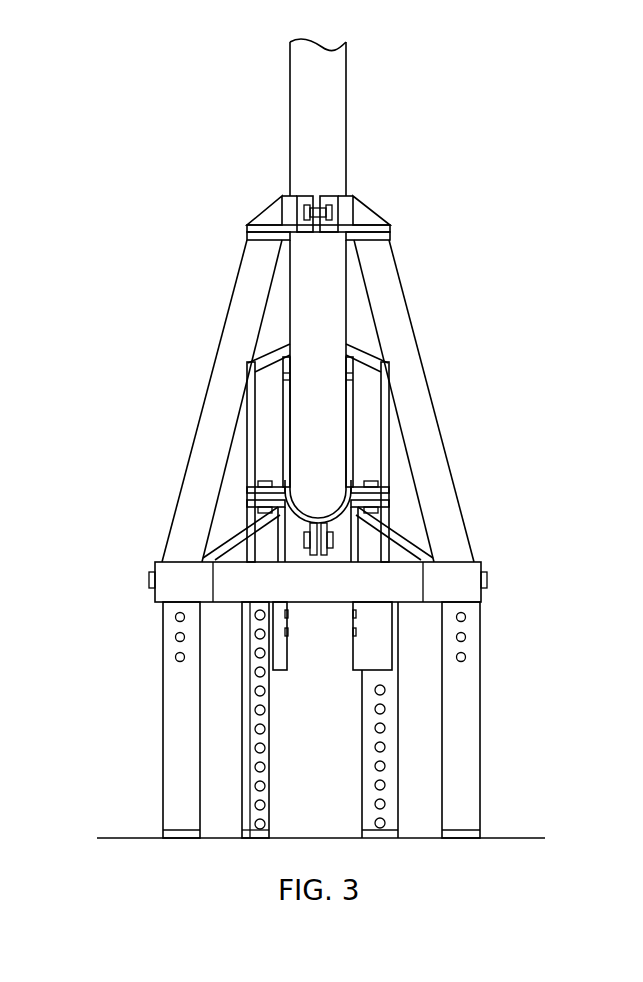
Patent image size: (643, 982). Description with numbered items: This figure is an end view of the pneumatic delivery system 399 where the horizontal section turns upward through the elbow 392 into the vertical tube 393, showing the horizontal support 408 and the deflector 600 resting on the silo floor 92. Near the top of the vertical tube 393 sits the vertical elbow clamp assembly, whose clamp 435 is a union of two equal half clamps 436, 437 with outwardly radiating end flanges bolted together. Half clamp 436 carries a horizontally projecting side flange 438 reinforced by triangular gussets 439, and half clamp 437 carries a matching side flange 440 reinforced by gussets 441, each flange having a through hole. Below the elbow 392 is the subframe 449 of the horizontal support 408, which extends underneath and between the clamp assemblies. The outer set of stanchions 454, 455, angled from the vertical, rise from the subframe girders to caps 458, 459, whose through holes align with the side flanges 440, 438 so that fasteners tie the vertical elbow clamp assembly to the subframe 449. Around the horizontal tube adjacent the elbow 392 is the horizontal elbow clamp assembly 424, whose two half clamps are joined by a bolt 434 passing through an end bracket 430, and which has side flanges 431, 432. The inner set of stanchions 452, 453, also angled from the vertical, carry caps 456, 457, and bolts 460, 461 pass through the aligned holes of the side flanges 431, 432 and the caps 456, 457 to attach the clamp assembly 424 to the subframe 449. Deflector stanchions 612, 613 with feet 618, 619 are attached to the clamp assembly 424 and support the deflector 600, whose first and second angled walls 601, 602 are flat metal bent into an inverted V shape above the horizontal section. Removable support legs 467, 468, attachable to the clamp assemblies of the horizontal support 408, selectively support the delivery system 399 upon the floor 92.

The delivery system 399 is at (382, 68).
The vertical tube 393 is at (347, 130).
The elbow 392 is at (348, 298).
The clamp 435 is at (417, 210).
The half clamp 436 is at (282, 197).
The half clamp 437 is at (353, 197).
The reinforcing gussets 439 is at (270, 210).
The reinforcing gussets 441 is at (370, 208).
The side flange 438 is at (243, 225).
The side flange 440 is at (390, 227).
The cap 459 is at (245, 233).
The cap 458 is at (390, 232).
The stanchion 455 is at (205, 404).
The stanchion 454 is at (432, 406).
The subframe 449 is at (123, 549).
The end bracket 430 is at (502, 545).
The deflector 600 is at (203, 327).
The first angled wall 601 is at (267, 357).
The second angled wall 602 is at (383, 352).
The horizontal support 408 is at (450, 336).
The stanchion 612 is at (247, 397).
The stanchion 613 is at (390, 398).
The horizontal elbow clamp assembly 424 is at (487, 500).
The foot 618 is at (263, 488).
The foot 619 is at (393, 488).
The side flange 431 is at (267, 497).
The side flange 432 is at (393, 495).
The bolt 460 is at (267, 482).
The bolt 461 is at (370, 480).
The cap 456 is at (267, 505).
The cap 457 is at (392, 506).
The bolt 434 is at (310, 537).
The stanchion 452 is at (213, 600).
The stanchion 453 is at (423, 600).
The removable support leg 467 is at (280, 795).
The removable support leg 468 is at (362, 728).
The floor 92 is at (125, 838).